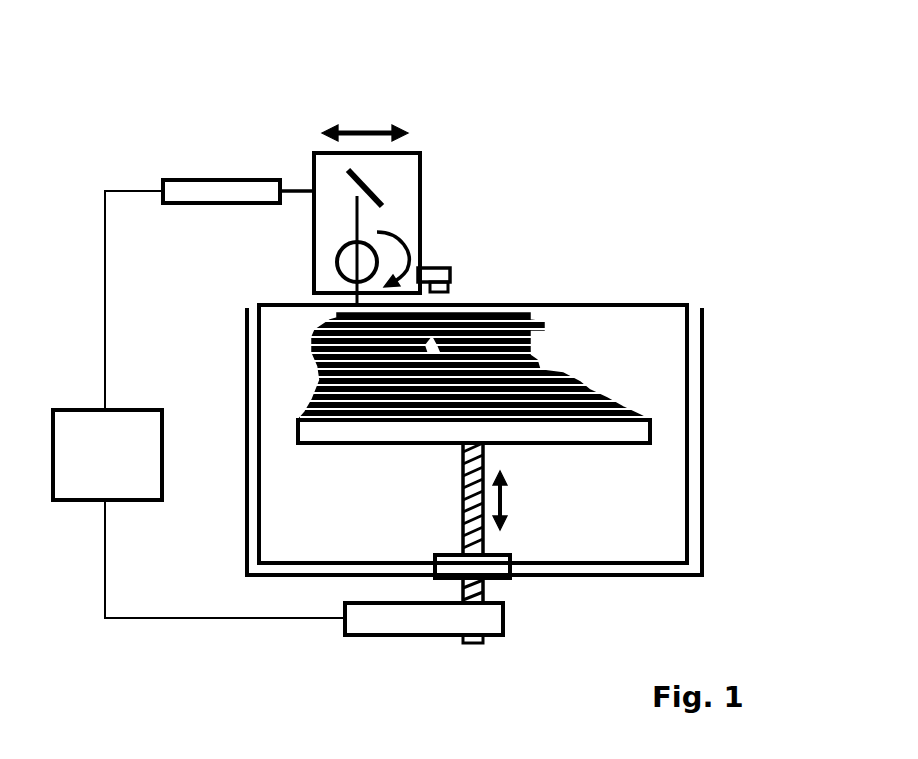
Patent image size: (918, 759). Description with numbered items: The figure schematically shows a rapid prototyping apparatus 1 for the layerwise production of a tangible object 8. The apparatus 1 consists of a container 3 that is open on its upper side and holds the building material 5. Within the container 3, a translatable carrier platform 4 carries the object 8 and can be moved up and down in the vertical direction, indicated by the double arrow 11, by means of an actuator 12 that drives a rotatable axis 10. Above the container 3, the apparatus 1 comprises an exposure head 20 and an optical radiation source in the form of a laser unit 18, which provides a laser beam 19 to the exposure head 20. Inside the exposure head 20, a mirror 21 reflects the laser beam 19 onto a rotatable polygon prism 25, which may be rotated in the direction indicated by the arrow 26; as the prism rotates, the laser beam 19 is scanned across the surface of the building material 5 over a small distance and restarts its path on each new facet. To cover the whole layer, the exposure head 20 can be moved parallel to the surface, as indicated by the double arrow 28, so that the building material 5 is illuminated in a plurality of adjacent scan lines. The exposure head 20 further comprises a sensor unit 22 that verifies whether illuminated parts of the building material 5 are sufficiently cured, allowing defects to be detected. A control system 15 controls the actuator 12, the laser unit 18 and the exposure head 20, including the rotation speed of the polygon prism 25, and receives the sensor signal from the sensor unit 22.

The apparatus 1 is at (694, 126).
The container 3 is at (703, 455).
The carrier platform 4 is at (655, 430).
The building material 5 is at (607, 305).
The tangible object 8 is at (562, 365).
The rotatable axis 10 is at (463, 493).
The double arrow 11 is at (512, 503).
The actuator 12 is at (430, 637).
The control system 15 is at (150, 408).
The laser unit 18 is at (209, 180).
The laser beam 19 is at (299, 185).
The exposure head 20 is at (420, 177).
The mirror 21 is at (385, 197).
The sensor unit 22 is at (451, 275).
The rotatable polygon prism 25 is at (337, 260).
The arrow 26 is at (420, 242).
The double arrow 28 is at (380, 127).